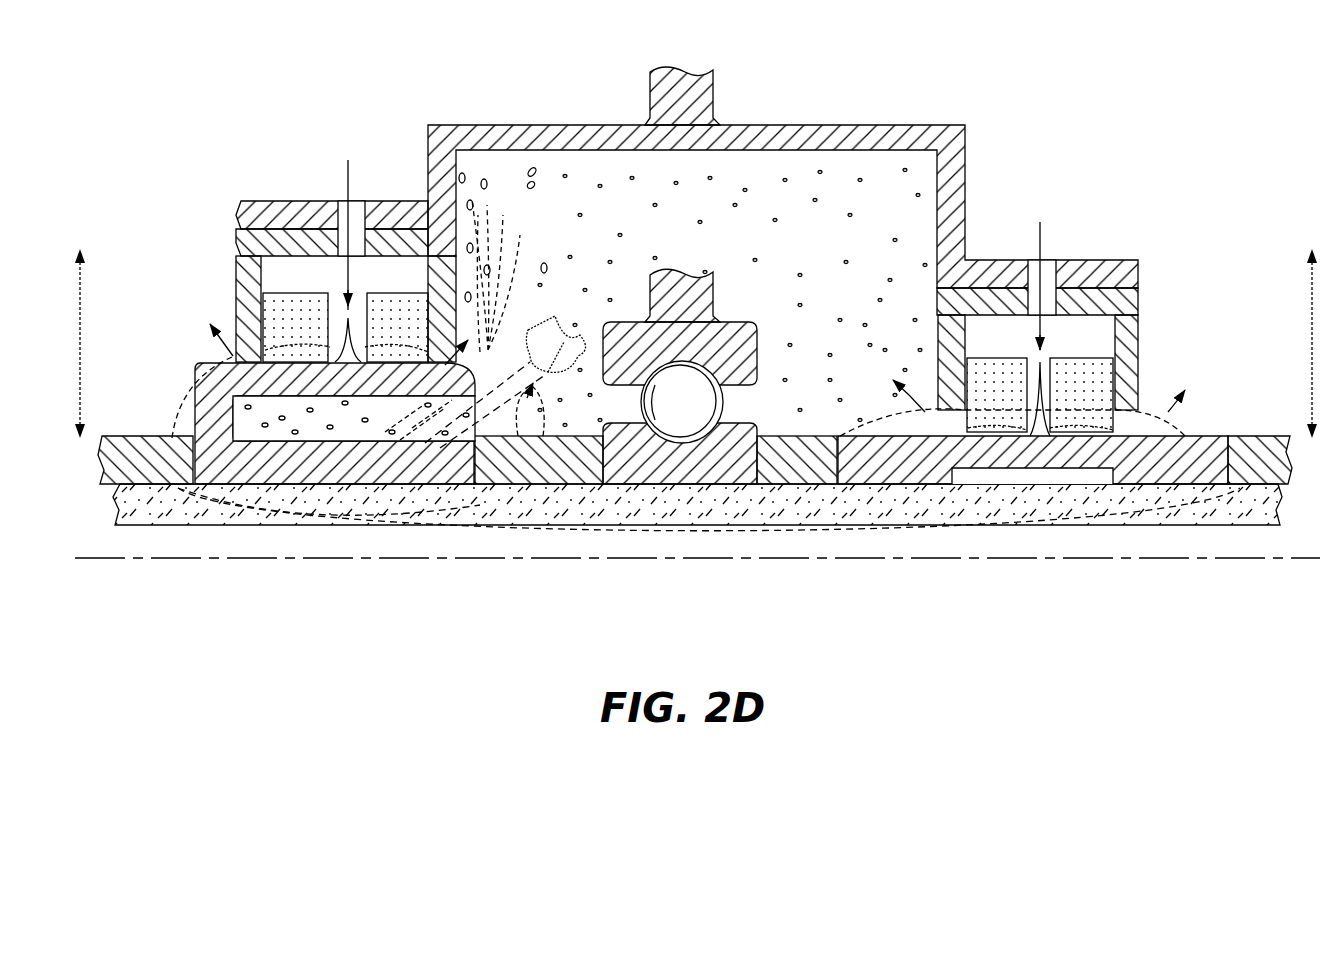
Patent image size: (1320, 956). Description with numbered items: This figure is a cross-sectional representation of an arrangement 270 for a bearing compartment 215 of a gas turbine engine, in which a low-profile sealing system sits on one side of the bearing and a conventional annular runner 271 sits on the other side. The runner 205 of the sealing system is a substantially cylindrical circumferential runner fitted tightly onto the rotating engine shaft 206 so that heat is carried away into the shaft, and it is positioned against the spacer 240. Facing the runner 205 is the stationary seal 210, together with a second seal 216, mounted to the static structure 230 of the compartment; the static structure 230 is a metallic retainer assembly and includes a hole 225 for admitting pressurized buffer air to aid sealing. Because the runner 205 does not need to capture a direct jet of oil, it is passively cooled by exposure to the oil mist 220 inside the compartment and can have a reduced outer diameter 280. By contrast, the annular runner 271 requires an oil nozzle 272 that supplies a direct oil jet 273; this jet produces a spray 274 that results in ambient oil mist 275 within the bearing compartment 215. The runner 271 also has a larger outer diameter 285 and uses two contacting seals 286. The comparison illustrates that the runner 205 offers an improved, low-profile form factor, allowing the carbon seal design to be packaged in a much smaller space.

The runner 205 is at (995, 522).
The engine shaft 206 is at (828, 488).
The seal 210 is at (1085, 376).
The bearing compartment 215 is at (830, 145).
The seal 216 is at (992, 376).
The oil mist 220 is at (578, 170).
The hole 225 is at (351, 180).
The static structure 230 is at (1138, 312).
The spacer 240 is at (783, 450).
The arrangement 270 is at (210, 105).
The runner 271 is at (327, 526).
The oil nozzle 272 is at (574, 326).
The direct oil jet 273 is at (522, 436).
The spray 274 is at (537, 246).
The oil mist 275 is at (880, 250).
The reduced outer diameter 280 is at (1310, 340).
The outer diameter 285 is at (83, 347).
The contacting seals 286 is at (397, 284).